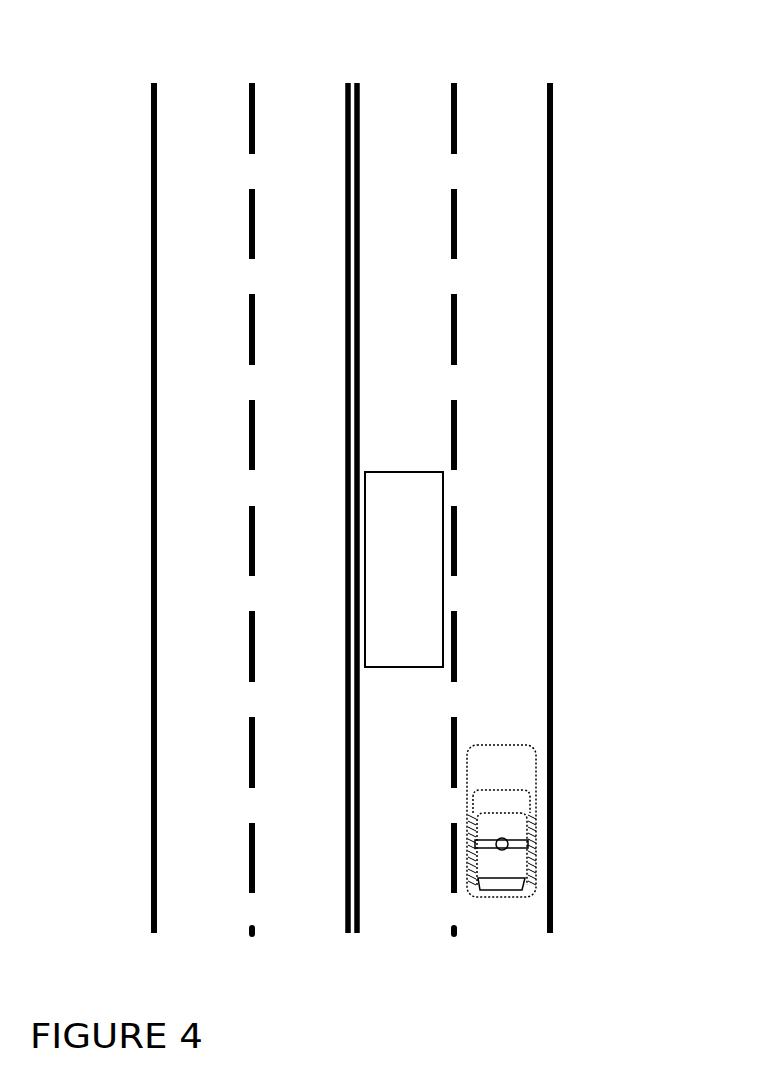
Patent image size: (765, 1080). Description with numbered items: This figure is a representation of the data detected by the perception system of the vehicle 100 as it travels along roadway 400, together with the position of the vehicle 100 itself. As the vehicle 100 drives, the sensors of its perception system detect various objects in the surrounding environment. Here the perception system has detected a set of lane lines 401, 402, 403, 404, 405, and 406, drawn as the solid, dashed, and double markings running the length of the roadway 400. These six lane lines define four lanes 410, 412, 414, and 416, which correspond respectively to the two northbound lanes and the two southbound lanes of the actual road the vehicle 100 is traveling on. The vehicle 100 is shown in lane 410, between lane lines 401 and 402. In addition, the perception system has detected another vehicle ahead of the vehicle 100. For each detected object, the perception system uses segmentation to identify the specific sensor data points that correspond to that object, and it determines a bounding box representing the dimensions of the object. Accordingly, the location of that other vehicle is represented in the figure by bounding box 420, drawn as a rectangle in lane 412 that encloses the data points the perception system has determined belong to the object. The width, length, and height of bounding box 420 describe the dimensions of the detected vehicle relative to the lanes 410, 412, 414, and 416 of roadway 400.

The roadway 400 is at (447, 527).
The lane 416 is at (410, 477).
The lane 414 is at (459, 478).
The lane 412 is at (507, 477).
The lane 410 is at (560, 478).
The lane line 406 is at (154, 138).
The lane line 405 is at (252, 190).
The lane line 404 is at (358, 263).
The lane line 403 is at (360, 325).
The lane line 402 is at (454, 403).
The lane line 401 is at (550, 477).
The bounding box 420 is at (443, 590).
The vehicle 100 is at (535, 828).